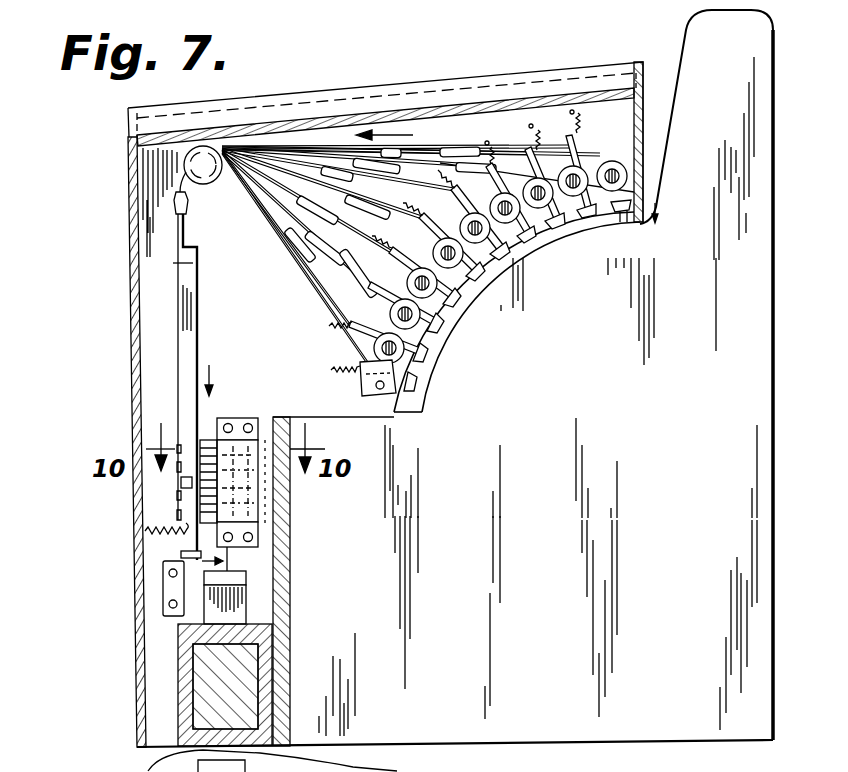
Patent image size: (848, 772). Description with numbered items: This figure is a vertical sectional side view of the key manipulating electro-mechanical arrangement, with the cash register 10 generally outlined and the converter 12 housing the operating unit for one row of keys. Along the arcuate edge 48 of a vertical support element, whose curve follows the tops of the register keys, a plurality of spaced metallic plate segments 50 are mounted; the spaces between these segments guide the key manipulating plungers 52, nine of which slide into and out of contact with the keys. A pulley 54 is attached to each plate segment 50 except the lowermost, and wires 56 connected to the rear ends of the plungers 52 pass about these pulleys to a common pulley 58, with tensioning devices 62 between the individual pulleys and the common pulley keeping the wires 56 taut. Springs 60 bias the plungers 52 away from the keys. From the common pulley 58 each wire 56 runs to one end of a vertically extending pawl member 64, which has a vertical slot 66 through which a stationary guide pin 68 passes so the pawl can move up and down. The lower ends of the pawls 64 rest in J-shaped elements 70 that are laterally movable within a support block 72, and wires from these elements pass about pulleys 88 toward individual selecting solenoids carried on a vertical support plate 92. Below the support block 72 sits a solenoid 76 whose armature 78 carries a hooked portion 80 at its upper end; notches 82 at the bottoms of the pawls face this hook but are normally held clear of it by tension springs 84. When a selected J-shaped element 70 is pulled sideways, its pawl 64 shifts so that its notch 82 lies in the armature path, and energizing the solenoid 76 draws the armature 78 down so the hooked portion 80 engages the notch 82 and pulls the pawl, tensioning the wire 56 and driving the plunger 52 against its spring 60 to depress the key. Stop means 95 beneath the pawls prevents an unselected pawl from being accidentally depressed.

The cash register 10 is at (684, 412).
The converter 12 is at (130, 336).
The arcuate edge 48 is at (417, 407).
The metallic plate segments 50 is at (371, 348).
The key manipulating plungers 52 is at (418, 333).
The pulley 54 is at (356, 323).
The wires 56 is at (294, 233).
The common pulley 58 is at (204, 185).
The springs 60 is at (326, 368).
The tensioning devices 62 is at (330, 271).
The pawl members 64 is at (193, 263).
The slot 66 is at (185, 303).
The stationary guide pin 68 is at (190, 323).
The J-shaped elements 70 is at (181, 489).
The support block 72 is at (212, 440).
The solenoid 76 is at (265, 640).
The armature 78 is at (250, 590).
The hooked portion 80 is at (245, 568).
The notches 82 is at (196, 553).
The tension springs 84 is at (165, 520).
The pulleys 88 is at (263, 440).
The vertical support plate 92 is at (290, 498).
The stop means 95 is at (175, 594).